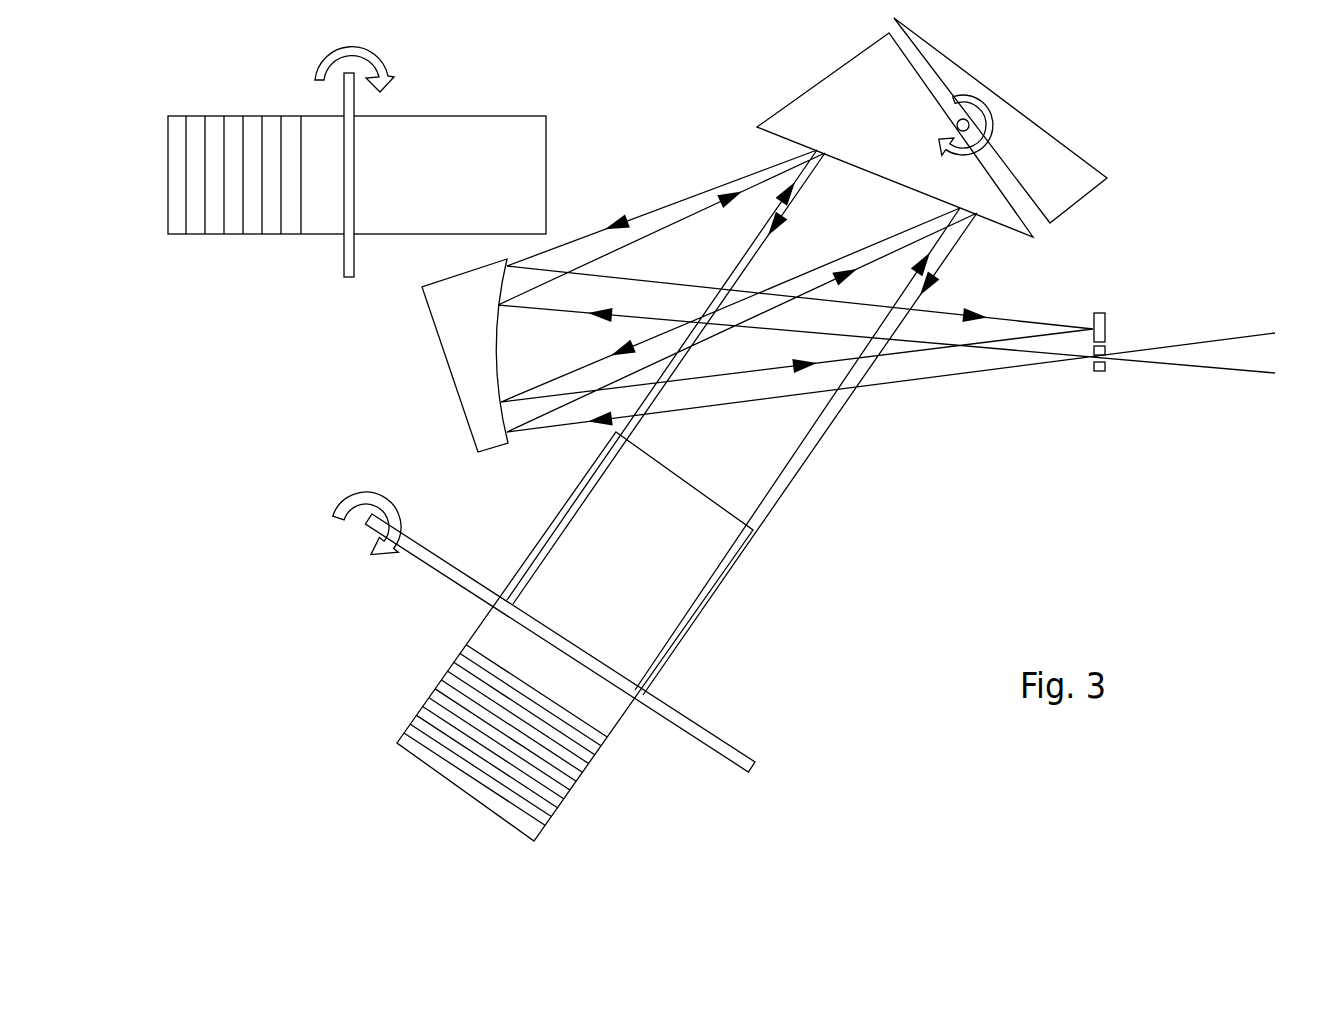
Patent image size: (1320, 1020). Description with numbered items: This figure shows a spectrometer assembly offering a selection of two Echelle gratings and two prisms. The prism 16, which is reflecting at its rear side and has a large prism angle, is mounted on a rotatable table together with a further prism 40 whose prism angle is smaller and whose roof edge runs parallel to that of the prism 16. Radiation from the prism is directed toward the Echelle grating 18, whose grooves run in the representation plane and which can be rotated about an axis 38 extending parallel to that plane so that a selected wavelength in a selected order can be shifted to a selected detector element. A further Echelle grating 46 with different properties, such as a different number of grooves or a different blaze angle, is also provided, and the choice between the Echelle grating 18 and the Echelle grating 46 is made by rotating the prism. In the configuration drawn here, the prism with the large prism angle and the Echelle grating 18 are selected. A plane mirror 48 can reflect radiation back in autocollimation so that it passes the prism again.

The prism 16 is at (873, 97).
The further prism 40 is at (1065, 195).
The further Echelle grating 46 is at (326, 217).
The plane mirror 48 is at (348, 263).
The axis 38 is at (475, 587).
The Echelle grating 18 is at (598, 692).